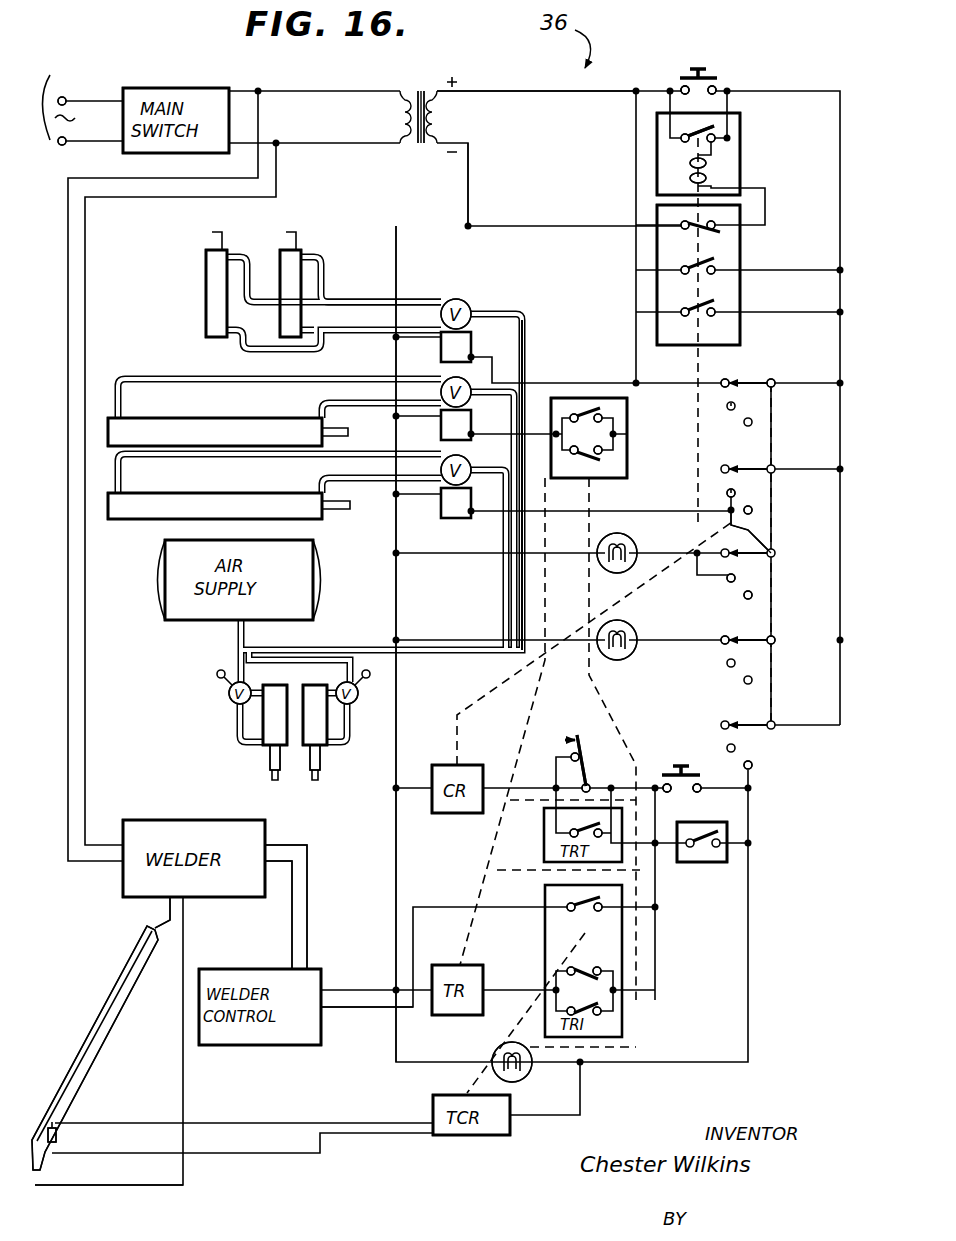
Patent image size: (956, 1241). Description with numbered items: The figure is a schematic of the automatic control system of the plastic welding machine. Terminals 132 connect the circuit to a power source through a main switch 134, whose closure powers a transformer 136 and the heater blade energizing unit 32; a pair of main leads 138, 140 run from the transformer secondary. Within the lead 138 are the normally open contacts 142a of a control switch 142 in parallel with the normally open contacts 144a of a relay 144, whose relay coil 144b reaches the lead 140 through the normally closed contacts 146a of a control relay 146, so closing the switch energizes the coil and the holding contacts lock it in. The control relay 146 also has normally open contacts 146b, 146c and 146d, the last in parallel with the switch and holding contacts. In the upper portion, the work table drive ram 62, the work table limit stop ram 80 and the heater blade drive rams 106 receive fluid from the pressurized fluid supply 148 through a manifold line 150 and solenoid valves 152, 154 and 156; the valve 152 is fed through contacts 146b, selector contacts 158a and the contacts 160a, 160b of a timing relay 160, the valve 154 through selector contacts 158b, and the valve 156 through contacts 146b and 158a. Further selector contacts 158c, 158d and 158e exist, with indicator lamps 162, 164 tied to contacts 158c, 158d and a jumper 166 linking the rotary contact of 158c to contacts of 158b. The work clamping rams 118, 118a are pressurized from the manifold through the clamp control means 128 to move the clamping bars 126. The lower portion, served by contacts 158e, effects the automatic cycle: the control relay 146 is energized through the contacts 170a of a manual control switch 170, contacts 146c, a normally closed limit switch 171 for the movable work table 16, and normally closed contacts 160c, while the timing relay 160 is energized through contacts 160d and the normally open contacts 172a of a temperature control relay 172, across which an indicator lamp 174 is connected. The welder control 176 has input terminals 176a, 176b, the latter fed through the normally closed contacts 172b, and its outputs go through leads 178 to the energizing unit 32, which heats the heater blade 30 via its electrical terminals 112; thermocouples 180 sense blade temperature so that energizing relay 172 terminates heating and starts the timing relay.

The terminals 132 is at (45, 100).
The main switch 134 is at (195, 88).
The transformer 136 is at (420, 88).
The main lead 138 is at (525, 88).
The main lead 140 is at (468, 190).
The control switch 142 is at (700, 70).
The control switch contacts 142a is at (682, 86).
The relay 144 is at (745, 130).
The relay contacts 144a is at (682, 140).
The relay coil 144b is at (690, 166).
The control relay 146 is at (742, 252).
The control relay contacts 146a is at (682, 223).
The control relay contacts 146b is at (715, 308).
The control relay contacts 146c is at (712, 848).
The control relay contacts 146d is at (682, 274).
The heater blade drive rams 106 is at (277, 262).
The solenoid valve 156 is at (468, 303).
The solenoid valve 152 is at (442, 383).
The solenoid valve 154 is at (442, 461).
The work table drive ram 62 is at (240, 418).
The work table limit stop ram 80 is at (160, 522).
The pressurized fluid supply 148 is at (310, 553).
The manifold line 150 is at (518, 598).
The selector contacts 158a is at (728, 380).
The selector contacts 158b is at (752, 512).
The selector switch contacts 158c is at (732, 583).
The selector switch contacts 158d is at (725, 645).
The selector switch contacts 158e is at (753, 768).
The jumper 166 is at (752, 528).
The timing relay 160 is at (630, 445).
The timing relay contacts 160a is at (602, 455).
The timing relay contacts 160b is at (602, 416).
The timing relay contacts 160c is at (570, 834).
The timing relay contacts 160d is at (601, 1012).
The indicator lamp 162 is at (632, 568).
The indicator lamp 164 is at (607, 657).
The limit switch 171 is at (585, 740).
The work table 16 is at (560, 748).
The manual control switch 170 is at (678, 765).
The manual control switch contacts 170a is at (668, 794).
The temperature control relay 172 is at (440, 1138).
The temperature control relay contacts 172a is at (600, 970).
The temperature control relay contacts 172b is at (600, 912).
The indicator lamp 174 is at (522, 1080).
The clamp control means 128 is at (226, 702).
The work clamping ram 118 is at (272, 735).
The work clamping ram 118a is at (313, 735).
The clamping bars 126 is at (275, 782).
The heater blade energizing unit 32 is at (190, 818).
The electrical terminals 112 is at (150, 925).
The heater blade 30 is at (88, 1080).
The thermocouples 180 is at (60, 1140).
The leads 178 is at (305, 918).
The welder control 176 is at (245, 1048).
The input terminal 176a is at (380, 985).
The input terminal 176b is at (350, 1010).